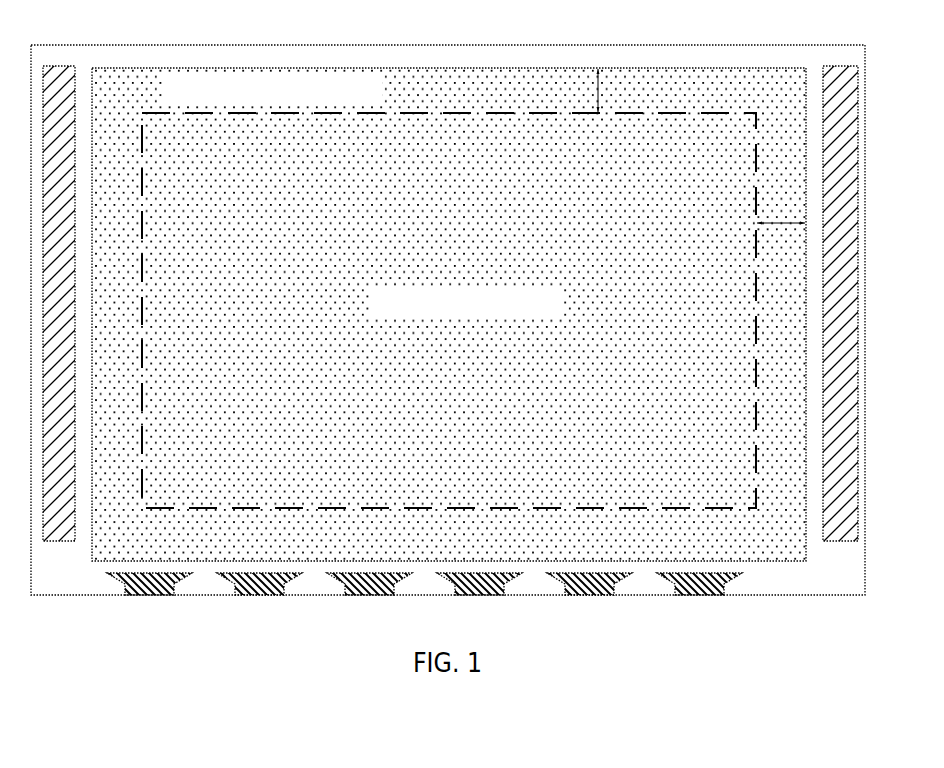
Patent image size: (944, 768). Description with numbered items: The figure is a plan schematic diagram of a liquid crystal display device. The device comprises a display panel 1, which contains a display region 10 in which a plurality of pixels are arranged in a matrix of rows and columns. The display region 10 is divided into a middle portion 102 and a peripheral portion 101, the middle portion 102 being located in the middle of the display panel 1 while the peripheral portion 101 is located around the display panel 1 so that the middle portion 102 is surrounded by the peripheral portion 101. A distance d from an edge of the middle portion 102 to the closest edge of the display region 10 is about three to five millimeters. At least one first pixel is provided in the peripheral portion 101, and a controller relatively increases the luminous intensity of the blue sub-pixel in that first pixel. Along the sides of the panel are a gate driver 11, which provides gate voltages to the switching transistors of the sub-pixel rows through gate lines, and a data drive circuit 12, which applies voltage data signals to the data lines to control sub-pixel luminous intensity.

The display panel 1 is at (755, 45).
The display region 10 is at (617, 68).
The peripheral portion 101 is at (483, 147).
The middle portion 102 is at (449, 310).
The gate driver 11 is at (68, 76).
The data drive circuit 12 is at (371, 590).